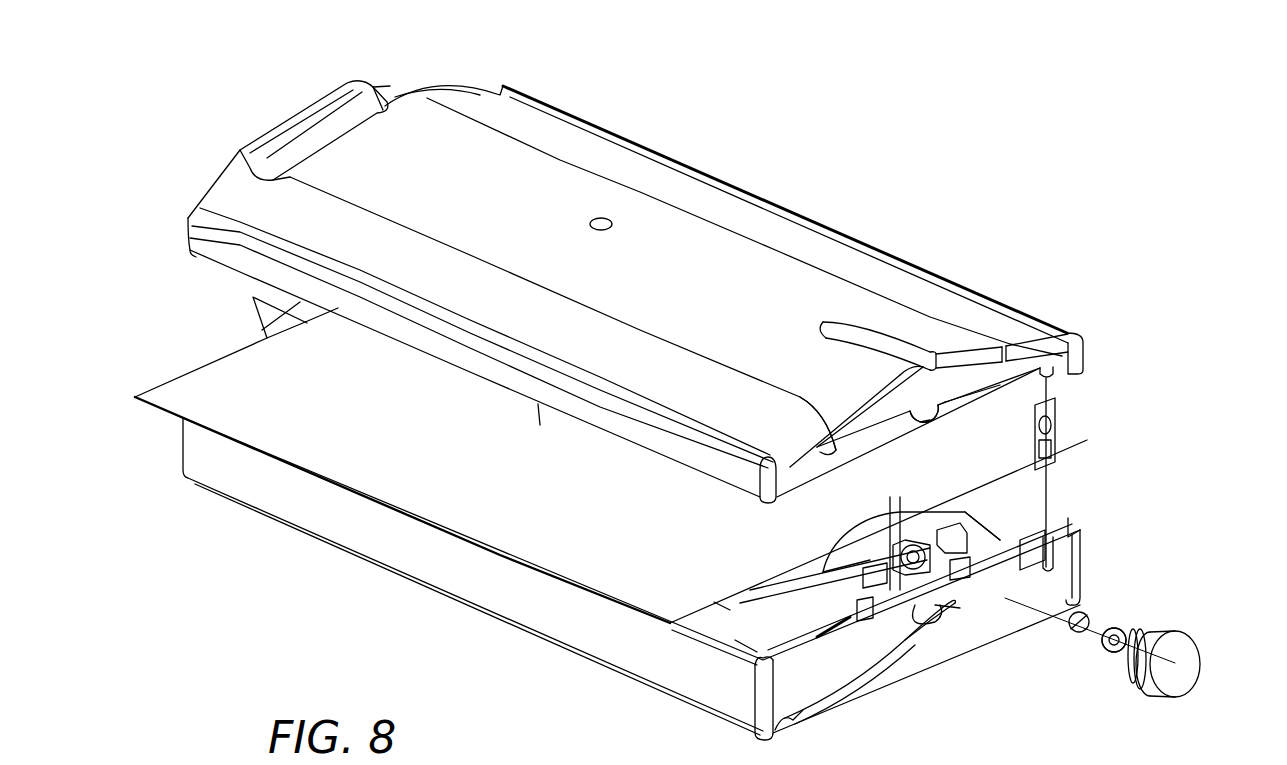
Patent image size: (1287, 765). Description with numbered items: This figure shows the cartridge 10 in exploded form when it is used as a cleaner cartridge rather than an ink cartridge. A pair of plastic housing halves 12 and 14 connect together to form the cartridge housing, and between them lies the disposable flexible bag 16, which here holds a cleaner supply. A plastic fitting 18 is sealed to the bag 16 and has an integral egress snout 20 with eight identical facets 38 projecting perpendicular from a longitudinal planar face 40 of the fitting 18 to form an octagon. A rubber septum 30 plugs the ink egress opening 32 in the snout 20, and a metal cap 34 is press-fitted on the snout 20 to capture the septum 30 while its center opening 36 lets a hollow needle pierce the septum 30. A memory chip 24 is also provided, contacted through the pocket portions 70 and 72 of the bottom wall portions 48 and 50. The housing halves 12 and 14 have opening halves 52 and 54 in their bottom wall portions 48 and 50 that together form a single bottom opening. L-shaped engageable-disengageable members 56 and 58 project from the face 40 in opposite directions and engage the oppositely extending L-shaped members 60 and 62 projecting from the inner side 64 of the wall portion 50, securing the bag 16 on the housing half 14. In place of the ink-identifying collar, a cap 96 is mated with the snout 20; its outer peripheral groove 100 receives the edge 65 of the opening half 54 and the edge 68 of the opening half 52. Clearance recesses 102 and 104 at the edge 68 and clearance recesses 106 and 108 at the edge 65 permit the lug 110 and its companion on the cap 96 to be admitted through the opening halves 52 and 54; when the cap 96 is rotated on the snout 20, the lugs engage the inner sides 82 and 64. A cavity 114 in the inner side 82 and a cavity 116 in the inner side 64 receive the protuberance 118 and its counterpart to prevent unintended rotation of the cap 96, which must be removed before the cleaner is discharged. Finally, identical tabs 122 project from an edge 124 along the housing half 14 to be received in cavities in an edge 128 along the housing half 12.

The cartridge 10 is at (150, 90).
The housing half 12 is at (245, 208).
The housing half 14 is at (220, 462).
The bag 16 is at (258, 379).
The fitting 18 is at (845, 526).
The snout 20 is at (935, 598).
The memory chip 24 is at (1060, 425).
The septum 30 is at (1070, 625).
The ink egress opening 32 is at (938, 525).
The cap 34 is at (1108, 648).
The center opening 36 is at (1118, 630).
The facets 38 is at (904, 533).
The planar face 40 is at (835, 570).
The bottom wall portion 48 is at (814, 432).
The bottom wall portion 50 is at (800, 712).
The opening half 52 is at (947, 425).
The opening half 54 is at (962, 612).
The L-shaped engageable-disengageable member 56 is at (840, 600).
The L-shaped engageable-disengageable member 58 is at (975, 505).
The L-shaped engageable-disengageable member 60 is at (864, 608).
The L-shaped engageable-disengageable member 62 is at (985, 567).
The inner side 64 is at (724, 604).
The edge 65 is at (942, 618).
The edge 68 is at (912, 420).
The pocket portion 70 is at (1046, 368).
The pocket portion 72 is at (1060, 548).
The inner side 82 is at (814, 474).
The cap 96 is at (1212, 681).
The outer peripheral groove 100 is at (1168, 640).
The clearance recess 102 is at (904, 440).
The clearance recess 104 is at (962, 412).
The clearance recess 106 is at (925, 628).
The clearance recess 108 is at (948, 598).
The lug 110 is at (1132, 668).
The cavity 114 is at (903, 373).
The cavity 116 is at (896, 650).
The protuberance 118 is at (1141, 674).
The tabs 122 is at (995, 550).
The edge 124 is at (1076, 516).
The edge 128 is at (540, 425).